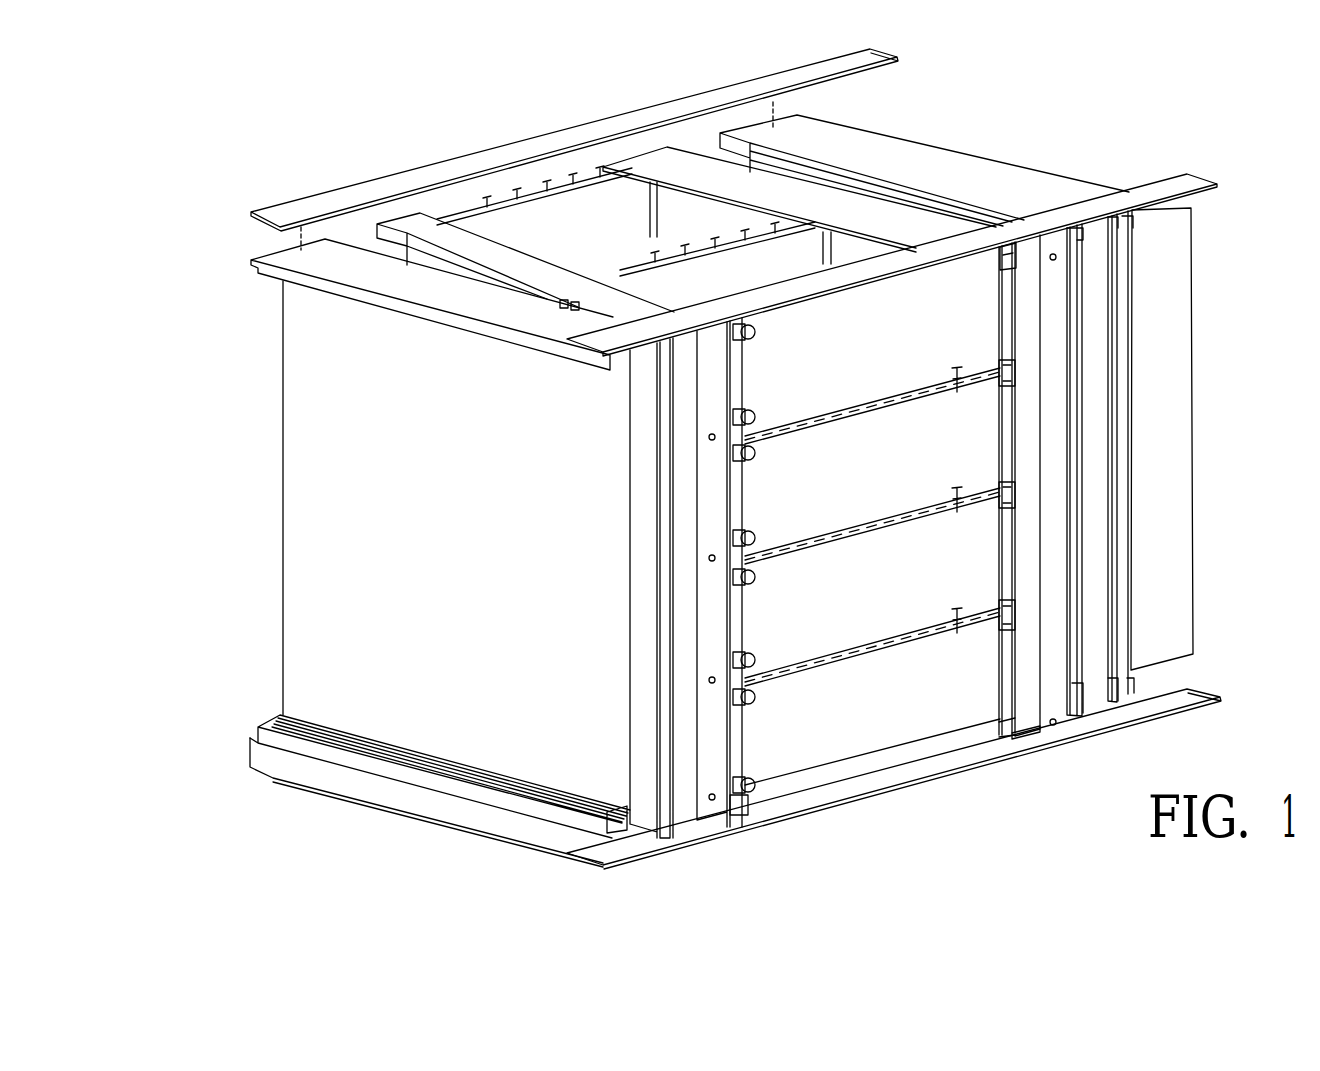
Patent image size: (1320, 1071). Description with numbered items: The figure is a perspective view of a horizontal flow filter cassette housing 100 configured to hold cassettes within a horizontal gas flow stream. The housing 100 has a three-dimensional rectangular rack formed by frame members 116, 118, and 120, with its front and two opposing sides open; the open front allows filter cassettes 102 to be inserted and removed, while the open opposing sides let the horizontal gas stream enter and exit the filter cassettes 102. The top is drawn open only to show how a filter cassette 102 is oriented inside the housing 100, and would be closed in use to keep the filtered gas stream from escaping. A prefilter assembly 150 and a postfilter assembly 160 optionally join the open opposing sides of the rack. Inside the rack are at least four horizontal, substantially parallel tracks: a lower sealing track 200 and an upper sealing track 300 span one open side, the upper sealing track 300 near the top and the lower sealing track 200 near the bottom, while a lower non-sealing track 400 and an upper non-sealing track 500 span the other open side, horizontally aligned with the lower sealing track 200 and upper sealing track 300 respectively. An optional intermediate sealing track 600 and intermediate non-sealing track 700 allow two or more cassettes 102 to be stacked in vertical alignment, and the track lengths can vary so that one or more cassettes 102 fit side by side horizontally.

The horizontal flow filter cassette housing 100 is at (280, 103).
The filter cassette 102 is at (975, 300).
The frame member 116 is at (414, 222).
The frame member 118 is at (1005, 544).
The frame member 120 is at (503, 153).
The prefilter assembly 150 is at (267, 261).
The postfilter assembly 160 is at (1167, 294).
The lower sealing track 200 is at (1018, 738).
The upper sealing track 300 is at (1008, 242).
The lower non-sealing track 400 is at (745, 811).
The upper non-sealing track 500 is at (727, 333).
The intermediate sealing track 600 is at (1015, 368).
The intermediate non-sealing track 700 is at (726, 442).